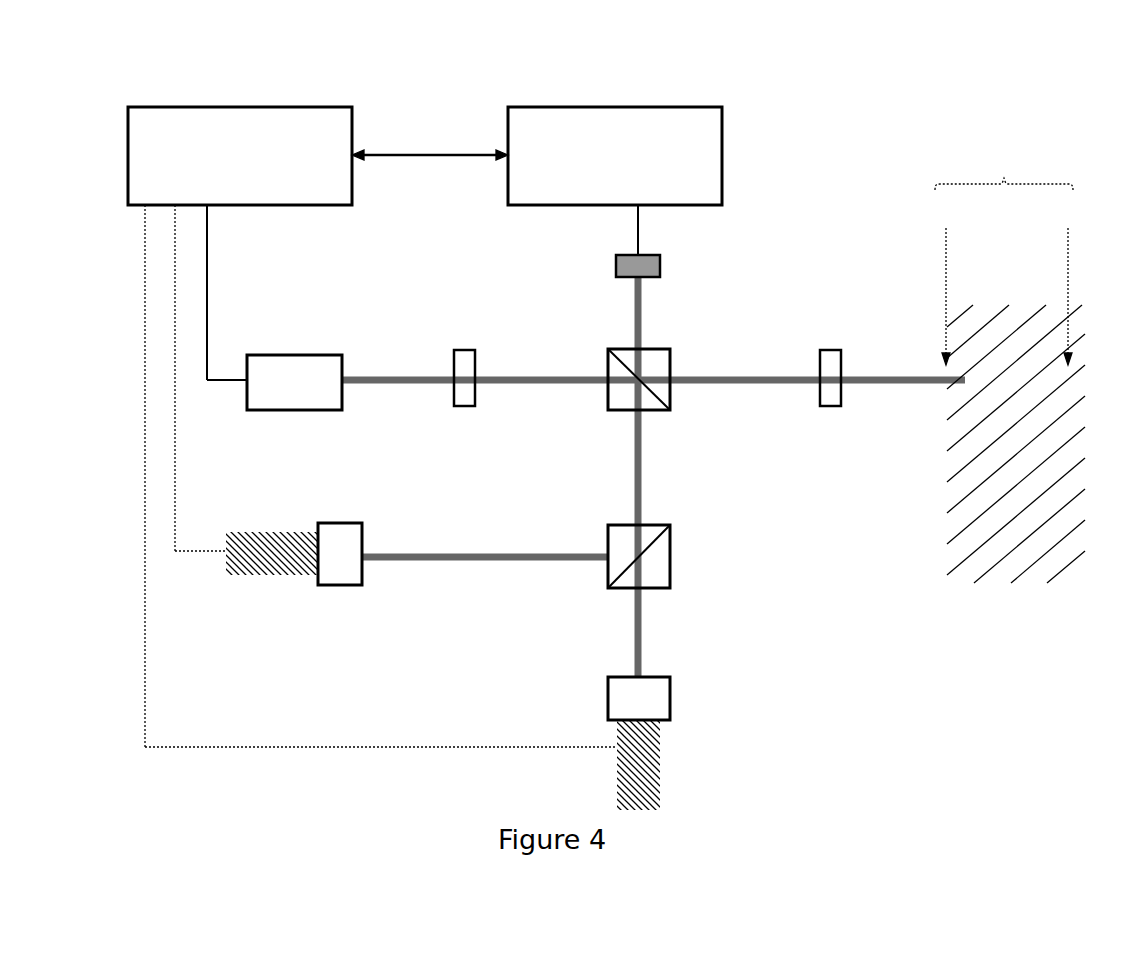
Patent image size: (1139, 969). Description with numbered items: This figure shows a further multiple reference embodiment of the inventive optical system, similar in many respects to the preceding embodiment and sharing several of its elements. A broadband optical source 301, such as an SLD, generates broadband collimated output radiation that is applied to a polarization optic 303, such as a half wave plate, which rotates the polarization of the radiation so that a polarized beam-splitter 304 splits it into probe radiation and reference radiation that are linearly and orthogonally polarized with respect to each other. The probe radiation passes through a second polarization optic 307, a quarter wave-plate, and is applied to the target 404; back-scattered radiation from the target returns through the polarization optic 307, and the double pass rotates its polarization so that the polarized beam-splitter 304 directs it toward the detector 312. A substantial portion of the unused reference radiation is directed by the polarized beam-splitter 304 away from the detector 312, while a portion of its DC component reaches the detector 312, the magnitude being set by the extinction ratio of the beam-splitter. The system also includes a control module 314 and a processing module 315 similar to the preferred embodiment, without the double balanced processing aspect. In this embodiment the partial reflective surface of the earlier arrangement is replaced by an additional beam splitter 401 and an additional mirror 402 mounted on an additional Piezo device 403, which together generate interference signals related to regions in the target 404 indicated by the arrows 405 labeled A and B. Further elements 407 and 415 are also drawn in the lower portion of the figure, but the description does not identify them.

The broadband optical source 301 is at (272, 415).
The polarization optic 303 is at (458, 412).
The polarized beam-splitter 304 is at (618, 342).
The polarization optic 307 is at (845, 410).
The detector 312 is at (605, 262).
The control module 314 is at (356, 190).
The processing module 315 is at (726, 160).
The additional beam splitter 401 is at (678, 545).
The additional mirror 402 is at (368, 580).
The additional Piezo device 403 is at (250, 582).
The target 404 is at (1015, 592).
The arrows 405 is at (1000, 176).
The optical element 407 is at (680, 685).
The absorber / beam dump 415 is at (665, 760).